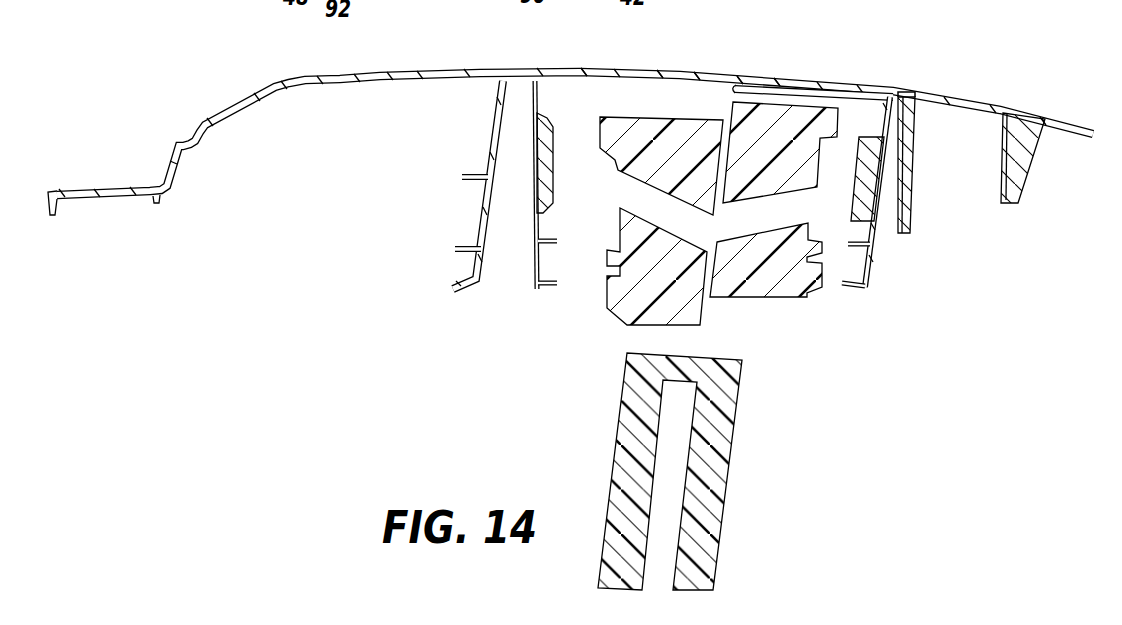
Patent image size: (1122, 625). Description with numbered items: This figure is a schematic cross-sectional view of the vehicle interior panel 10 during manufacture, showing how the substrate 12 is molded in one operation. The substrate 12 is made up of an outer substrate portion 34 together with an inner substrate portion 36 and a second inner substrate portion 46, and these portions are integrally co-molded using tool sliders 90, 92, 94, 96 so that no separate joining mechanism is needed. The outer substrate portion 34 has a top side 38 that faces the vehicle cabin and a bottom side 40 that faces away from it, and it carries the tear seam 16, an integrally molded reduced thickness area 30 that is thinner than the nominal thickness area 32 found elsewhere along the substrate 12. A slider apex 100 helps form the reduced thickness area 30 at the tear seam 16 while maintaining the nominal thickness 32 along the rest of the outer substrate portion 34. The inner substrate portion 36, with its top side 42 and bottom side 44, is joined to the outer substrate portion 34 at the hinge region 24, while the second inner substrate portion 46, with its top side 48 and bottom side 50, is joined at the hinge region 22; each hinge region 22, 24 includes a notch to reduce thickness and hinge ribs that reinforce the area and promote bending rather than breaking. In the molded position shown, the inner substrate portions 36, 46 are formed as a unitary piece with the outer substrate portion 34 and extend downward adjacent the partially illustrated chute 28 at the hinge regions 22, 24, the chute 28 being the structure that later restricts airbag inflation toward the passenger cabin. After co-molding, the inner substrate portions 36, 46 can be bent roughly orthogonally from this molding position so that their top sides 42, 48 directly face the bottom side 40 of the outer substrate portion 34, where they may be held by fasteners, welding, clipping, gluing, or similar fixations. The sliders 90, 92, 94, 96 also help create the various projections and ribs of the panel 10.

The panel 10 is at (895, 28).
The substrate 12 is at (803, 79).
The tear seam 16 is at (718, 73).
The hinge region 22 is at (522, 70).
The hinge region 24 is at (903, 88).
The chute 28 is at (912, 183).
The reduced thickness area 30 is at (717, 73).
The nominal thickness area 32 is at (645, 70).
The outer substrate portion 34 is at (593, 69).
The inner substrate portion 36 is at (870, 270).
The top side 38 is at (765, 78).
The bottom side 40 is at (828, 100).
The top side 42 is at (860, 257).
The bottom side 44 is at (867, 247).
The second inner substrate portion 46 is at (537, 267).
The top side 48 is at (542, 256).
The bottom side 50 is at (534, 228).
The tool slider 90 is at (610, 136).
The tool slider 92 is at (627, 318).
The tool slider 94 is at (832, 135).
The tool slider 96 is at (796, 288).
The apex 100 is at (672, 353).